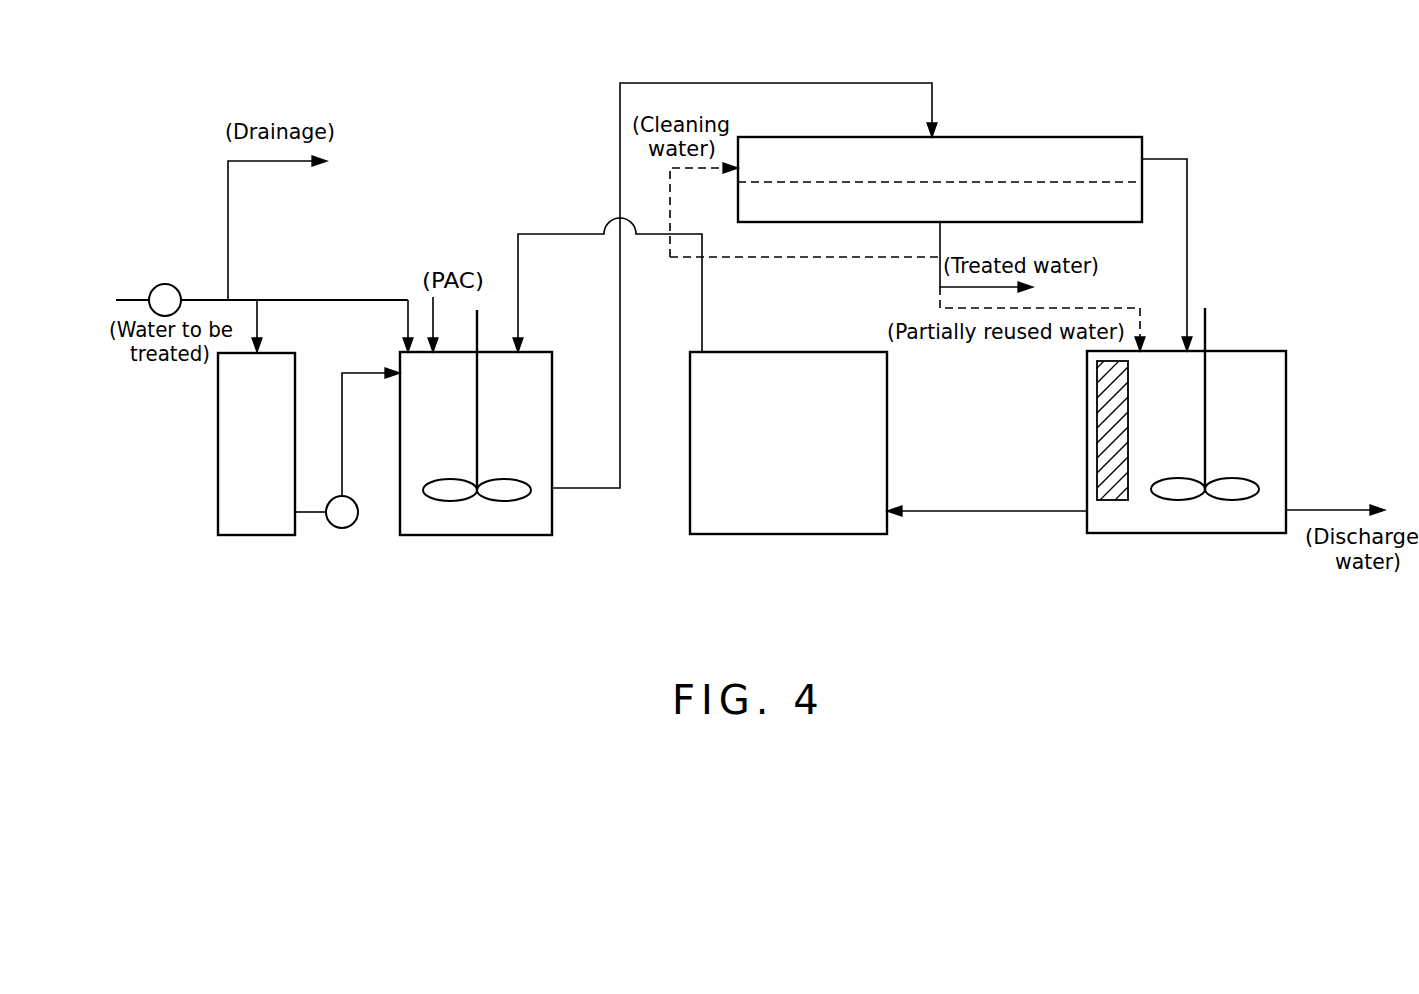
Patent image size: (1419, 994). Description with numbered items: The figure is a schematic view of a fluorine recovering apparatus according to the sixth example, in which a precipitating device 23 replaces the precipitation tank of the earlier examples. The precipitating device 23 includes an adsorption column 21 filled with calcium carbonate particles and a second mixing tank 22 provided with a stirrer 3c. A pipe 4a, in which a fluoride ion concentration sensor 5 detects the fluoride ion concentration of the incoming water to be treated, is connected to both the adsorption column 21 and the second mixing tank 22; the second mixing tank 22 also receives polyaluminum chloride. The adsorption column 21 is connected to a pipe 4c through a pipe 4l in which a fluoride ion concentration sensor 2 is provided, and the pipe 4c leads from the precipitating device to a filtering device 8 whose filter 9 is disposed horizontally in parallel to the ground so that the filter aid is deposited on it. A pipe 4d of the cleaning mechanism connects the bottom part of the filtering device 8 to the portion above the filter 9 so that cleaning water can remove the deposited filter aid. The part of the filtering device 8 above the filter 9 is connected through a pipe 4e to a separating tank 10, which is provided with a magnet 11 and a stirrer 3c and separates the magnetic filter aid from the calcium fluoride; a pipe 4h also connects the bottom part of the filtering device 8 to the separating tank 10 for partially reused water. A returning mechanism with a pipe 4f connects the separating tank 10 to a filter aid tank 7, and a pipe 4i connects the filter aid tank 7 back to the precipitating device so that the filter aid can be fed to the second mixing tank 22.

The fluoride ion concentration sensor 2 is at (352, 496).
The stirrer 3c is at (478, 400).
The pipe 4a is at (133, 296).
The pipe 4c is at (722, 83).
The pipe 4d is at (790, 258).
The pipe 4e is at (1188, 244).
The pipe 4f is at (987, 512).
The pipe 4h is at (1132, 306).
The pipe 4i is at (701, 304).
The pipe 4l is at (357, 372).
The fluoride ion concentration sensor 5 is at (165, 283).
The filter aid tank 7 is at (795, 535).
The filtering device 8 is at (987, 136).
The filter 9 is at (1080, 180).
The separating tank 10 is at (1195, 533).
The magnet 11 is at (1128, 386).
The adsorption column 21 is at (218, 474).
The second mixing tank 22 is at (470, 535).
The precipitating device 23 is at (289, 604).